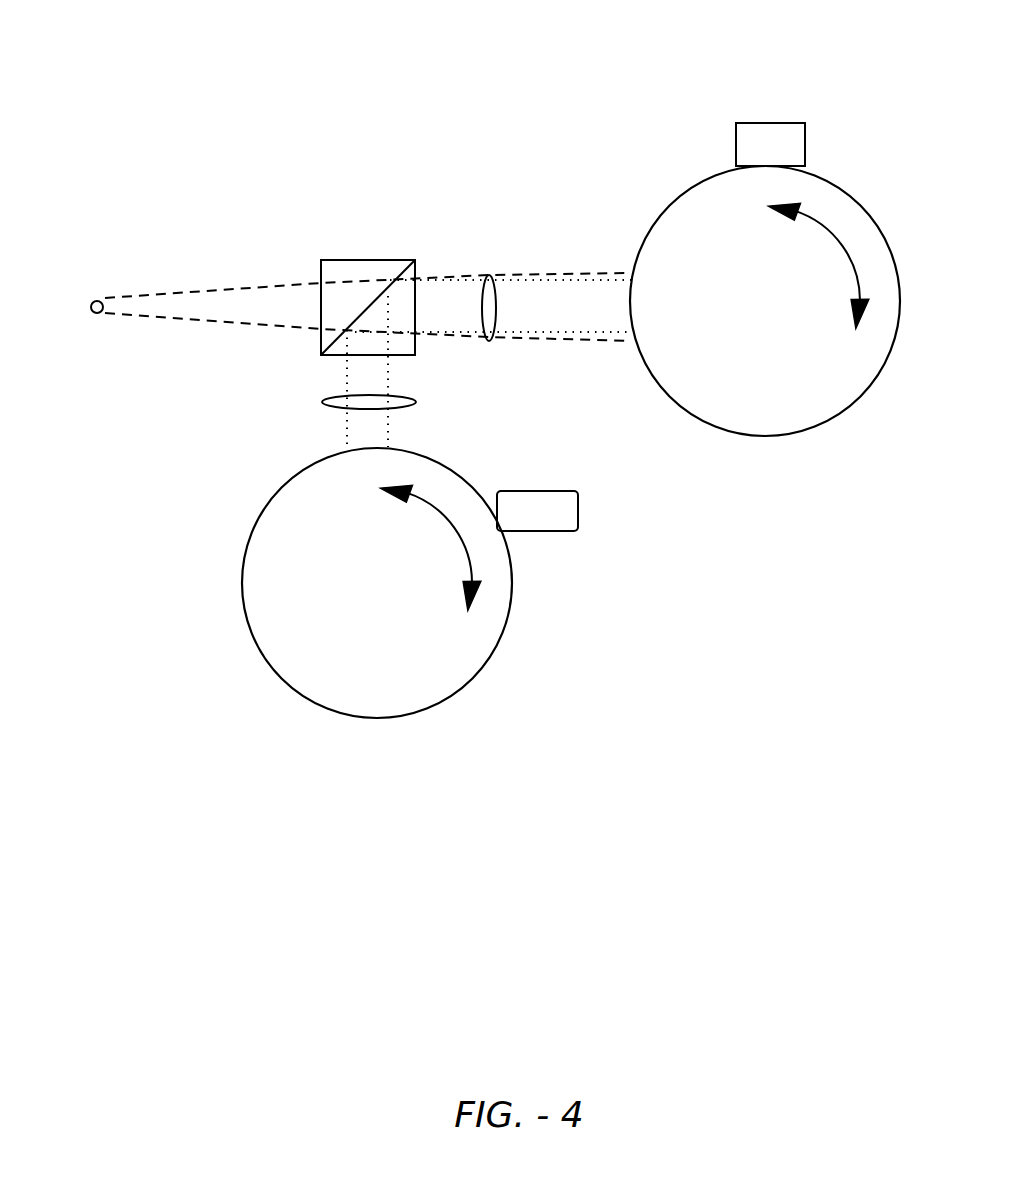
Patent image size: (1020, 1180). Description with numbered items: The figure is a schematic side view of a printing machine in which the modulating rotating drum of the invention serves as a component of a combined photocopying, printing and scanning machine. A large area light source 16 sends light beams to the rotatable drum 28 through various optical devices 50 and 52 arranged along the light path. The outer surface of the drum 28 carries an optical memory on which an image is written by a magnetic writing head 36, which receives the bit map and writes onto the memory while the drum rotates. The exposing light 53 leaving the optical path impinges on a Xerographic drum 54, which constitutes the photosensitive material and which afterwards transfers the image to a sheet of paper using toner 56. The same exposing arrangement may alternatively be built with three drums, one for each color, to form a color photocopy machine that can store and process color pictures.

The light source 16 is at (93, 300).
The drum 28 is at (805, 410).
The magnetic writing head 36 is at (752, 123).
The optical device 50 is at (362, 260).
The optical device 52 is at (487, 275).
The exposing light 53 is at (343, 432).
The Xerographic drum 54 is at (497, 642).
The toner 56 is at (550, 531).